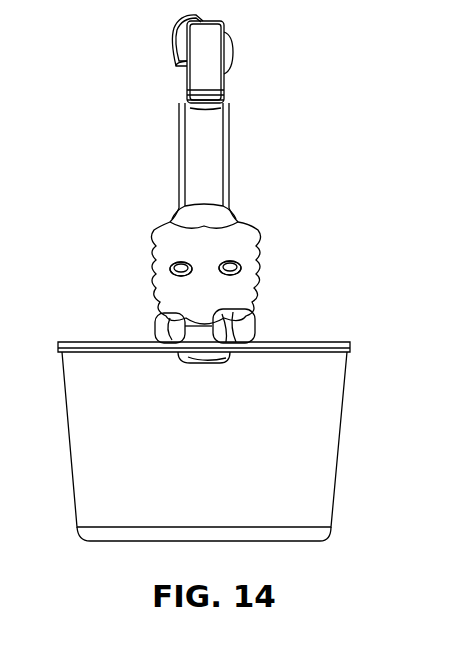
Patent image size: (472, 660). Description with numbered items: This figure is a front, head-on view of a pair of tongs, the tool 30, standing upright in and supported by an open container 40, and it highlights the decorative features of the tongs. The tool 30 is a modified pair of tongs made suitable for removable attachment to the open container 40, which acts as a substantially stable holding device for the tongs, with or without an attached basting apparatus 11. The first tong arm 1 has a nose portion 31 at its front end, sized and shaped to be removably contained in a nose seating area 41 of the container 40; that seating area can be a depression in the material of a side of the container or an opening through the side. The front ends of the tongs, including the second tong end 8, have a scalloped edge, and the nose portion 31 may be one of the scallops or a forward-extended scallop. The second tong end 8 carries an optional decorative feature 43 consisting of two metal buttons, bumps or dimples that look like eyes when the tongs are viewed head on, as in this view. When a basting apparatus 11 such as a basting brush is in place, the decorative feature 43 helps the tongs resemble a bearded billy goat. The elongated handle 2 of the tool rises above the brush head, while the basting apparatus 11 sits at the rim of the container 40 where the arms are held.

The first tong arm 1 is at (168, 331).
The handle 2 is at (210, 168).
The second tong end 8 is at (243, 232).
The basting apparatus 11 is at (213, 322).
The tool 30 is at (132, 101).
The nose portion 31 is at (205, 363).
The open container 40 is at (104, 553).
The nose seating area 41 is at (230, 355).
The decorative feature 43 is at (230, 261).